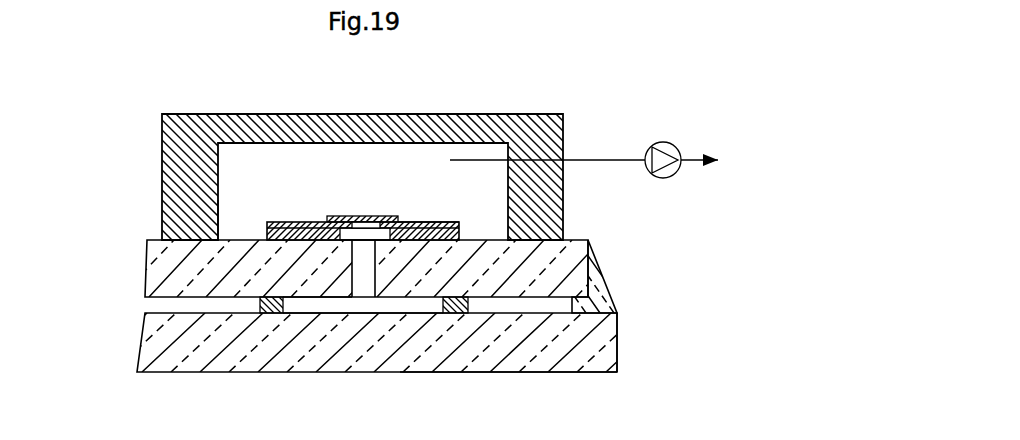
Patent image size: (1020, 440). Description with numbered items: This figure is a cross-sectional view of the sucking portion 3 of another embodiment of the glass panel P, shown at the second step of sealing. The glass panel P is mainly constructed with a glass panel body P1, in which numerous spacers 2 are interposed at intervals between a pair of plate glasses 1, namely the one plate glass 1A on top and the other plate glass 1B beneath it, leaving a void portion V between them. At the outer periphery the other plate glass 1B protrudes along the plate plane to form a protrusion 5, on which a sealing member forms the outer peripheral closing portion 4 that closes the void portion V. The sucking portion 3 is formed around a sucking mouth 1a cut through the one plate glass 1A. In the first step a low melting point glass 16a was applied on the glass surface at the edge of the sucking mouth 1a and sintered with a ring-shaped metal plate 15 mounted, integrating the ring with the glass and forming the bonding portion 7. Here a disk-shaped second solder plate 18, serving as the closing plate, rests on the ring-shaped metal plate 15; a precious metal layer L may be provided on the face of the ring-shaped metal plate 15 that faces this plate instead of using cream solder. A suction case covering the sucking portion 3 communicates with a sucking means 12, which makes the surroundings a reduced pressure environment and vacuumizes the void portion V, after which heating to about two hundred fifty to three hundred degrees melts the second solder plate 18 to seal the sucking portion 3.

The sucking portion 3 is at (370, 186).
The sucking means 12 is at (658, 142).
The ring-shaped metal plate 15 is at (277, 222).
The bonding portion 7 is at (350, 221).
The second solder plate 18 is at (370, 216).
The precious metal layer L is at (417, 221).
The low melting point glass 16a is at (262, 238).
The plate glass 1A is at (334, 317).
The plate glass 1B is at (170, 328).
The plate glass 1 is at (381, 329).
The sucking mouth 1a is at (358, 262).
The spacer 2 is at (447, 311).
The outer peripheral closing portion 4 is at (611, 293).
The protrusion 5 is at (612, 347).
The void portion V is at (330, 307).
The glass panel body P1 is at (492, 374).
The glass panel P is at (381, 329).